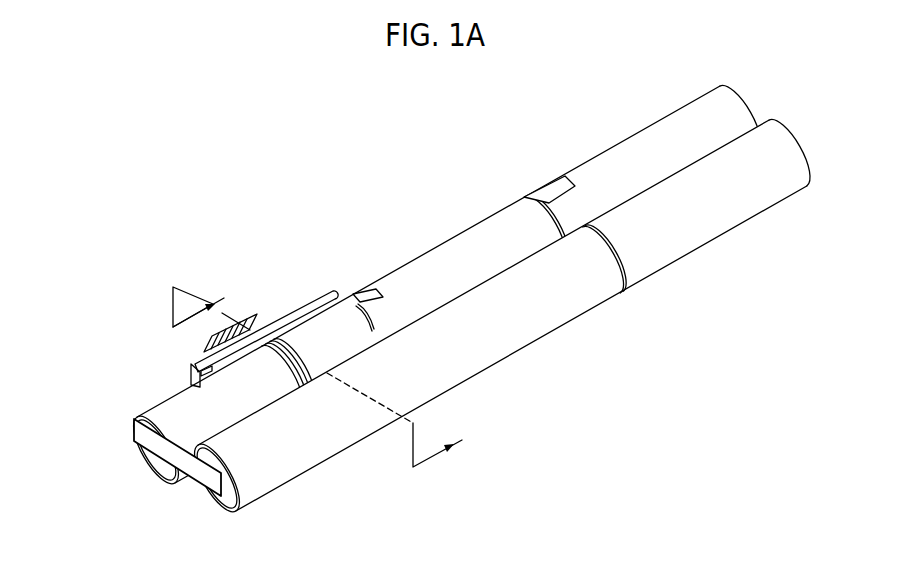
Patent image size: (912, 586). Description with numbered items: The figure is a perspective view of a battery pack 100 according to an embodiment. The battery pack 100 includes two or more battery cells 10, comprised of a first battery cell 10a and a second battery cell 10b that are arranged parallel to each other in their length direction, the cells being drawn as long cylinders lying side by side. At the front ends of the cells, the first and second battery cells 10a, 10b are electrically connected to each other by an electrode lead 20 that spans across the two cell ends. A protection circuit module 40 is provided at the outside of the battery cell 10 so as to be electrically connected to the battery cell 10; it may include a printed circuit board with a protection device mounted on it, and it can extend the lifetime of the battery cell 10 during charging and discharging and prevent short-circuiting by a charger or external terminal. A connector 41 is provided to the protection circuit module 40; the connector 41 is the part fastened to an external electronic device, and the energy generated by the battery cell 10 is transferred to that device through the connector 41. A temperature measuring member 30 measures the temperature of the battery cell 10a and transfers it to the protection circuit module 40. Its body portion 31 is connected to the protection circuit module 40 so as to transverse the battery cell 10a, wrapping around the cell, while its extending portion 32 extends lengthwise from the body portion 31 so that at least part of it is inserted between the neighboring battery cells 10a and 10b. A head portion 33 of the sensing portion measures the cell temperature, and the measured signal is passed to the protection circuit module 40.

The battery pack 100 is at (336, 164).
The battery cells 10 is at (52, 392).
The first battery cell 10a is at (180, 413).
The second battery cell 10b is at (140, 450).
The electrode lead 20 is at (180, 467).
The temperature measuring member 30 is at (358, 520).
The body portion 31 is at (262, 378).
The extending portion 32 is at (313, 396).
The head portion 33 is at (294, 384).
The protection circuit module 40 is at (279, 308).
The connector 41 is at (210, 339).